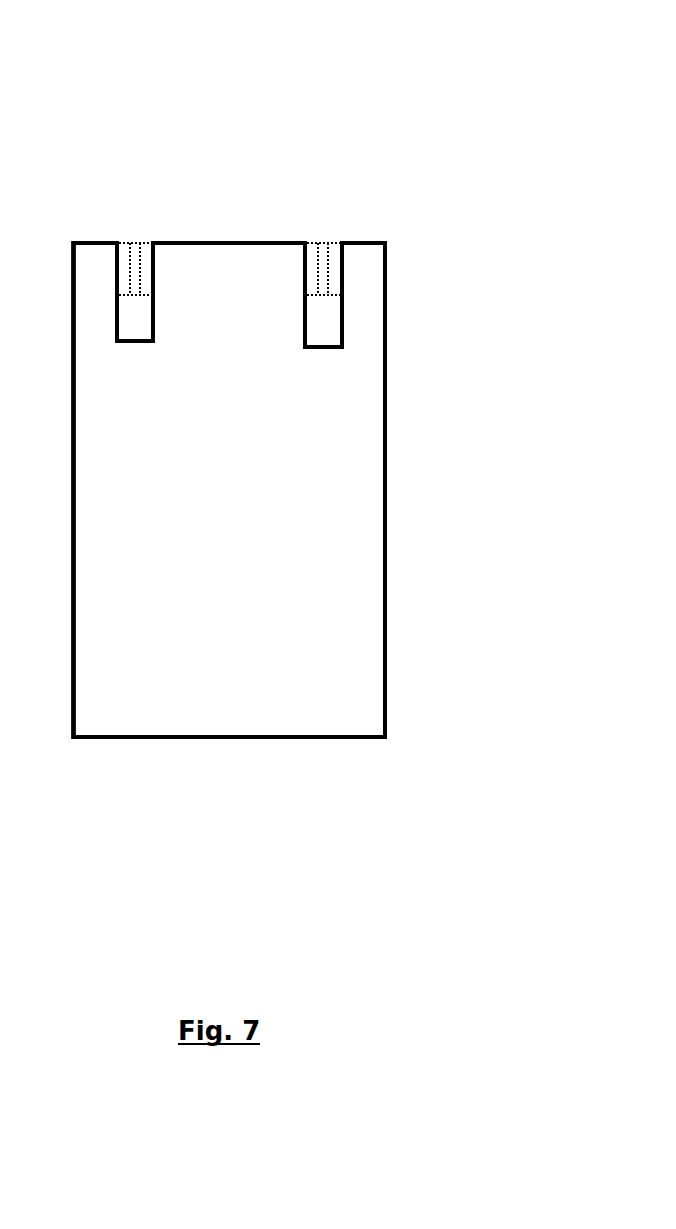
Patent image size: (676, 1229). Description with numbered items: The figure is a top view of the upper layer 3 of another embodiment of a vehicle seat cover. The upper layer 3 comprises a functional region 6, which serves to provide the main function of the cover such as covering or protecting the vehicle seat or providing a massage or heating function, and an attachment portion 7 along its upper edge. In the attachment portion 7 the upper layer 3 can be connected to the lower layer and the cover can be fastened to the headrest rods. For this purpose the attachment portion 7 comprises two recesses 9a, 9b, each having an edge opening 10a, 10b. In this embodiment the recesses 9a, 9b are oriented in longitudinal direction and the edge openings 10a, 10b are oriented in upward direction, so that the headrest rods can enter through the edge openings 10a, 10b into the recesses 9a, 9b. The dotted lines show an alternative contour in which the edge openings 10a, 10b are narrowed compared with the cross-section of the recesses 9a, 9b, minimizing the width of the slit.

The upper layer 3 is at (230, 372).
The functional region 6 is at (224, 656).
The attachment portion 7 is at (412, 304).
The recess 9a is at (130, 331).
The recess 9b is at (322, 330).
The edge opening 10a is at (134, 241).
The edge opening 10b is at (322, 241).